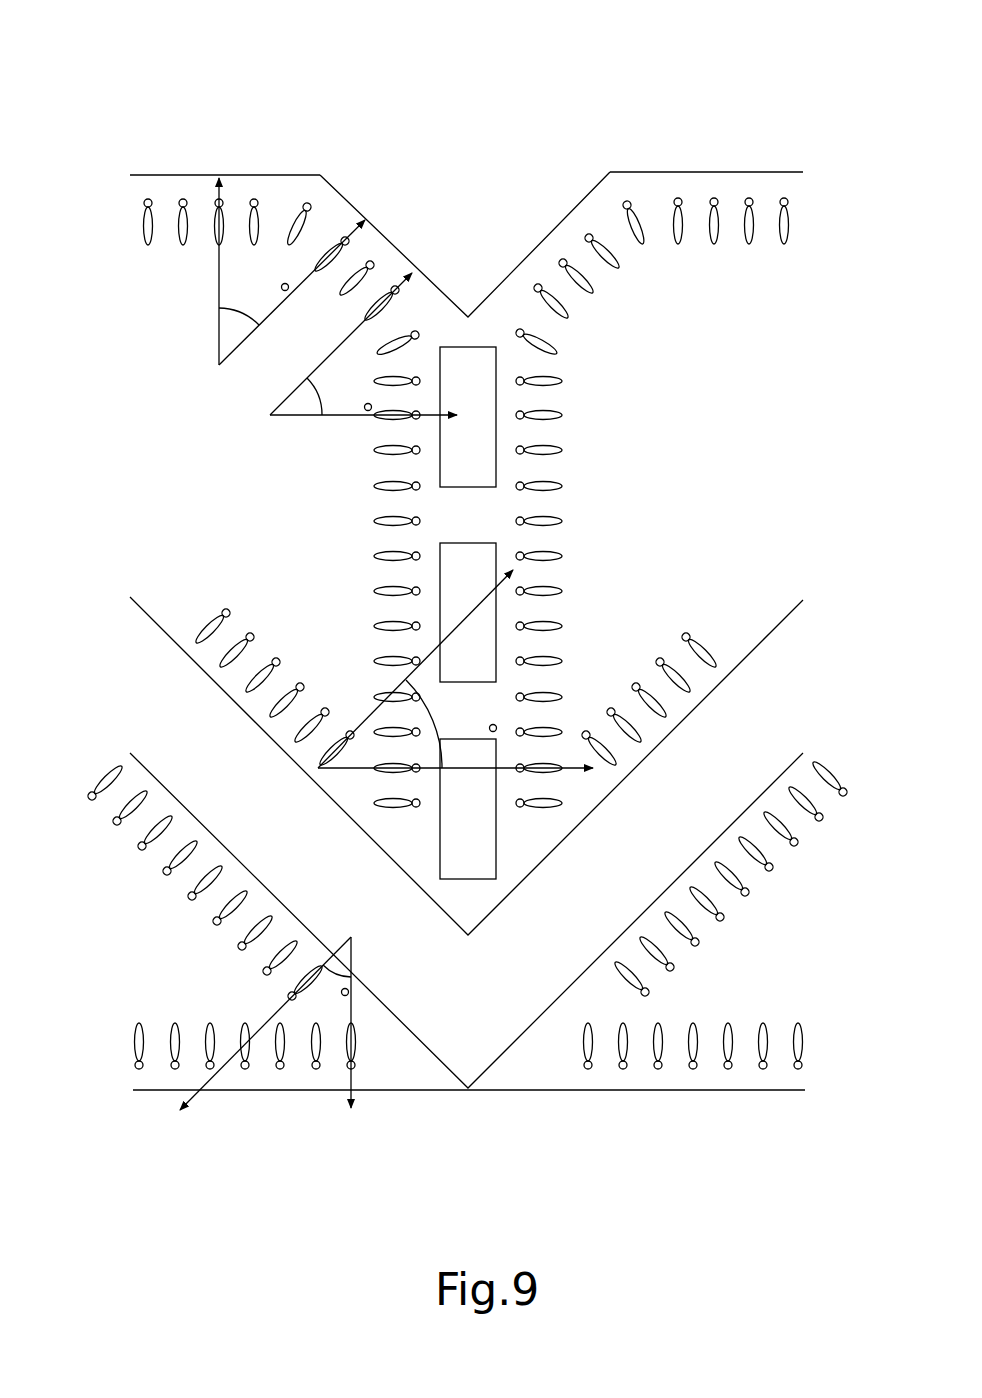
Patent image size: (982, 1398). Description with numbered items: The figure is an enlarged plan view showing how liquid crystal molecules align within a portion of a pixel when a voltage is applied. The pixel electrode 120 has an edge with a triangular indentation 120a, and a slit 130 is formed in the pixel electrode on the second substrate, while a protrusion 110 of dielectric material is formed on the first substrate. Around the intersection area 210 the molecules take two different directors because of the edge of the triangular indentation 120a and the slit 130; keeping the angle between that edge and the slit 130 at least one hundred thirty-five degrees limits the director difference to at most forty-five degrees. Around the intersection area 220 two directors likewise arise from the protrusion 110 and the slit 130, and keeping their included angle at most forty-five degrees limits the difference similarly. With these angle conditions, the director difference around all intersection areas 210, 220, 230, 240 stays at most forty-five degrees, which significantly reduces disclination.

The protrusion 110 is at (507, 1003).
The pixel electrode 120 is at (467, 610).
The triangular indentation 120a is at (352, 204).
The slit 130 is at (467, 346).
The intersection area 210 is at (432, 313).
The intersection area 220 is at (420, 833).
The intersection area 230 is at (377, 1038).
The intersection area 240 is at (307, 190).